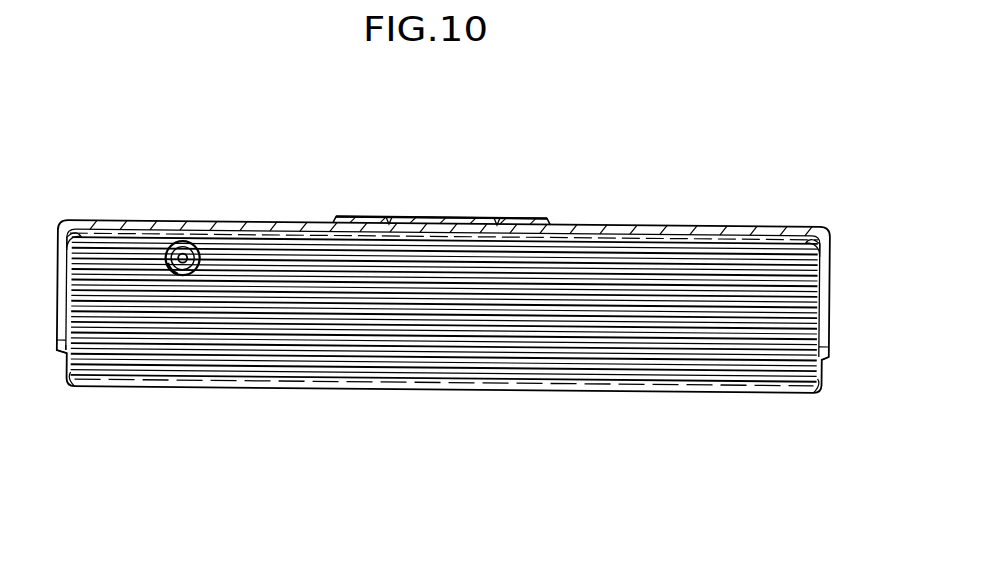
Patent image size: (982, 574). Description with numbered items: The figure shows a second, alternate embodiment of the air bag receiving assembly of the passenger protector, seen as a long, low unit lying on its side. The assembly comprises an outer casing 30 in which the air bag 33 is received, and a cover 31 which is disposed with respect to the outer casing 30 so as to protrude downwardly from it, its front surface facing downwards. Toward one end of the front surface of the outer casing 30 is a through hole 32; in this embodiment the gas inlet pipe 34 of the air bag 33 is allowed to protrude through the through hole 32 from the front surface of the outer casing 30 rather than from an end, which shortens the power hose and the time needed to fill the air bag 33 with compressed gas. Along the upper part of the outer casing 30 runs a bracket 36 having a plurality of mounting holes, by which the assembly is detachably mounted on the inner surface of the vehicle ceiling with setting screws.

The outer casing 30 is at (630, 232).
The cover 31 is at (532, 390).
The through hole 32 is at (183, 252).
The air bag 33 is at (383, 335).
The gas inlet pipe 34 is at (205, 244).
The bracket 36 is at (433, 222).